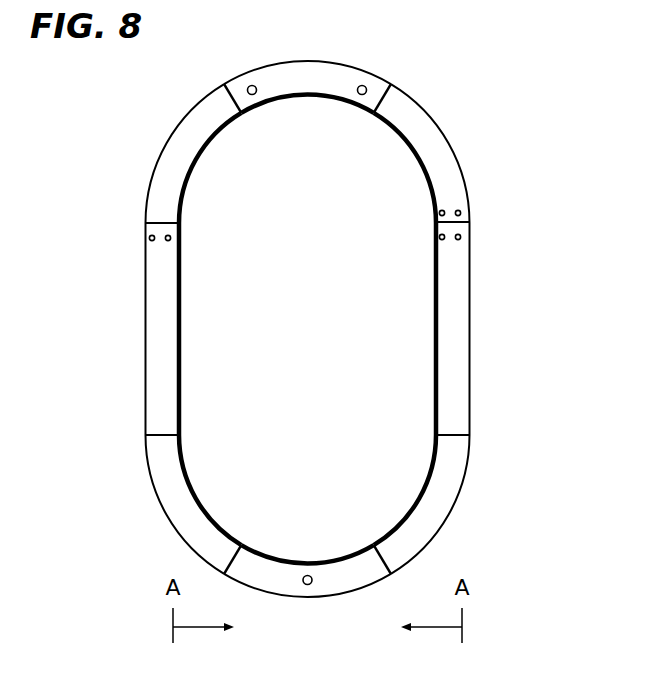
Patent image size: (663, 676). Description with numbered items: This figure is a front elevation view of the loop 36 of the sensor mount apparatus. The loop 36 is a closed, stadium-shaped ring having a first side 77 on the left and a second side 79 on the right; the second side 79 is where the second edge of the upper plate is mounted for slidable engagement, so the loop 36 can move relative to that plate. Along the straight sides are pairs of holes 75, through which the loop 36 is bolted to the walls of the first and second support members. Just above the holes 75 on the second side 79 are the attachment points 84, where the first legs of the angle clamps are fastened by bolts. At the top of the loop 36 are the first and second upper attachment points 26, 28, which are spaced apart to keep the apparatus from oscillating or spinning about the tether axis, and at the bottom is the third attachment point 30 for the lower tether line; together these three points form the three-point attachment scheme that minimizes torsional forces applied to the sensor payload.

The first upper attachment point 26 is at (250, 85).
The second upper attachment point 28 is at (362, 85).
The third attachment point 30 is at (308, 585).
The loop 36 is at (472, 447).
The holes 75 is at (166, 241).
The first side 77 is at (139, 344).
The second side 79 is at (477, 344).
The attachment points 84 is at (445, 210).